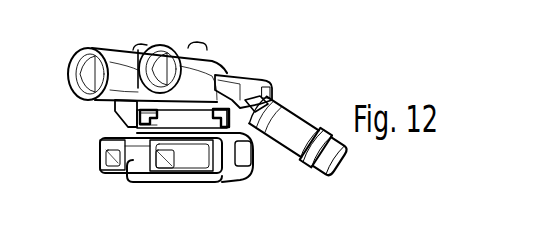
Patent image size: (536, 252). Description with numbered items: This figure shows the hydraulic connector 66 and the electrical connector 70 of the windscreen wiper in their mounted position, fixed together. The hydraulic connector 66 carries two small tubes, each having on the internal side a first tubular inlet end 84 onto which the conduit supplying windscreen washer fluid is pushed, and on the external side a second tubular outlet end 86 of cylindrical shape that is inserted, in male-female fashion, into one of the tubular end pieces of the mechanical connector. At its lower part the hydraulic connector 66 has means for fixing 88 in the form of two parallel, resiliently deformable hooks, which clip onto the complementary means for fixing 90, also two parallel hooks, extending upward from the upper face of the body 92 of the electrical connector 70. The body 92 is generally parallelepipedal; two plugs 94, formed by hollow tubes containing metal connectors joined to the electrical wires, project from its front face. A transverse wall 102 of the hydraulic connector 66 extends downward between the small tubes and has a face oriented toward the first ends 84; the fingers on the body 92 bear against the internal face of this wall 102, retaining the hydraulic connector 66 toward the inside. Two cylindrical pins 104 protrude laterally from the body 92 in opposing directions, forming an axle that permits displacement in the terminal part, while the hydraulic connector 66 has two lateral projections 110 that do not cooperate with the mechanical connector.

The hydraulic connector 66 is at (285, 101).
The electrical connector 70 is at (229, 187).
The first tubular inlet end 84 is at (322, 182).
The second tubular outlet end 86 is at (151, 62).
The means for fixing 88 is at (250, 105).
The complementary means for fixing 90 is at (224, 100).
The body 92 is at (186, 186).
The plugs 94 is at (163, 170).
The transverse wall 102 is at (188, 114).
The cylindrical pins 104 is at (254, 162).
The projections 110 is at (268, 78).